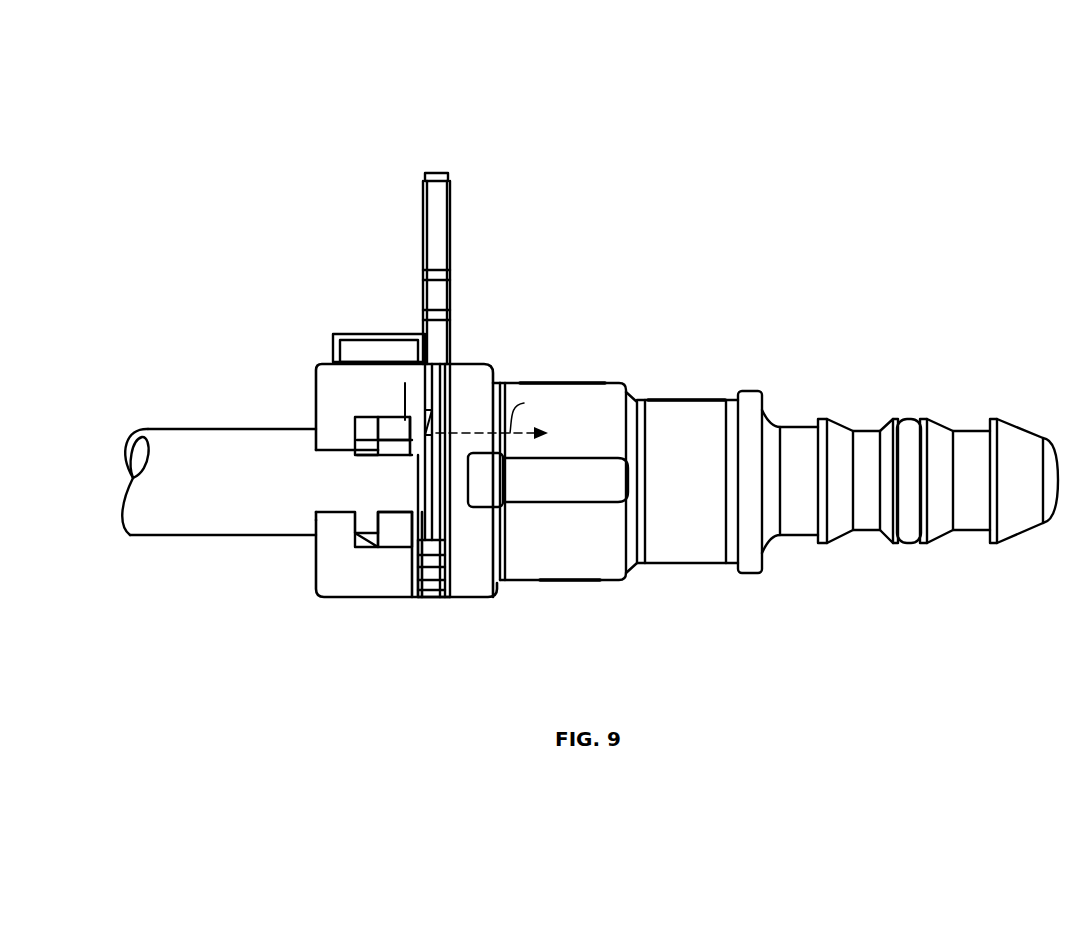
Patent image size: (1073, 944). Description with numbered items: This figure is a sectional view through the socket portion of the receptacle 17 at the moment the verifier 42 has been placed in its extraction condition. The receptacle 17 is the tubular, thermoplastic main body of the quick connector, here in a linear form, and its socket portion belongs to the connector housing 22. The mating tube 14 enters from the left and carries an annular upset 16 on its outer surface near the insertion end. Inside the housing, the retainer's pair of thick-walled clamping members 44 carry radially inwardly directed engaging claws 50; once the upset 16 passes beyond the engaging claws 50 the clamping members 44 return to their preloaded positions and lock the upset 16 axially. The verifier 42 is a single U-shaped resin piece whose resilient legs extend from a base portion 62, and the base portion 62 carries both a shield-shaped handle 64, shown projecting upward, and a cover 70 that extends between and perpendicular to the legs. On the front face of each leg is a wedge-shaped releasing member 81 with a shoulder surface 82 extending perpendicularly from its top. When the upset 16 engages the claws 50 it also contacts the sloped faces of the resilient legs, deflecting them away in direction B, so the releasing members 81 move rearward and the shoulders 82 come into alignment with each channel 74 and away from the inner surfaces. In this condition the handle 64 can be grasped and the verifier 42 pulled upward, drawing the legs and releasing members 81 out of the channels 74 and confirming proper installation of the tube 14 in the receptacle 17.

The verifier 42 is at (394, 137).
The mating tube 14 is at (193, 536).
The clamping members 44 is at (370, 452).
The cover 70 is at (397, 334).
The engaging claws 50 is at (412, 437).
The handle 64 is at (452, 232).
The channel 74 is at (450, 364).
The upset 16 is at (437, 398).
The shoulder surface 82 is at (433, 432).
The releasing member 81 is at (433, 418).
The base portion 62 is at (438, 376).
The connector housing 22 is at (588, 384).
The receptacle 17 is at (733, 616).